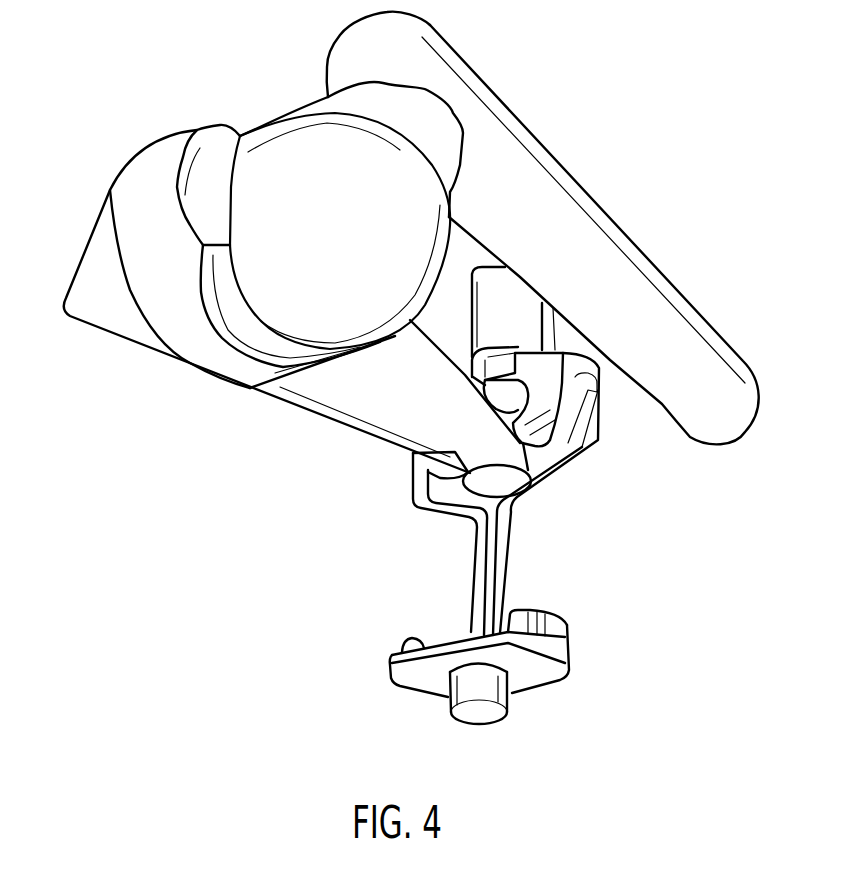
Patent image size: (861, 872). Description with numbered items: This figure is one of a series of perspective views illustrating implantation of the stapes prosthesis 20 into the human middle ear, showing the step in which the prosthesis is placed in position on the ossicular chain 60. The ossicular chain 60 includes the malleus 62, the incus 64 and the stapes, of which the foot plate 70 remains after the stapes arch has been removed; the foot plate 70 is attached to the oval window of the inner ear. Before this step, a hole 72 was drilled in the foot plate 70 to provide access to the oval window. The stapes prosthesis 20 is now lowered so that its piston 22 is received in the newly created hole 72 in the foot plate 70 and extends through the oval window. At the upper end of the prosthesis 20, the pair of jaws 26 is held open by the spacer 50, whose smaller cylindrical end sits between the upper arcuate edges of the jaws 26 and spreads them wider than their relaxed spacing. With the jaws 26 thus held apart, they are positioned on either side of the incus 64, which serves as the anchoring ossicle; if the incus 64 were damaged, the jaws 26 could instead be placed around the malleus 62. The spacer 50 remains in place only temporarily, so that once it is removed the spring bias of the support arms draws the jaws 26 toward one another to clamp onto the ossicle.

The stapes prosthesis 20 is at (606, 519).
The piston 22 is at (477, 692).
The jaws 26 is at (548, 393).
The spacer 50 is at (475, 265).
The ossicular chain 60 is at (712, 191).
The malleus 62 is at (601, 193).
The incus 64 is at (298, 418).
The foot plate 70 is at (532, 675).
The hole 72 is at (452, 682).